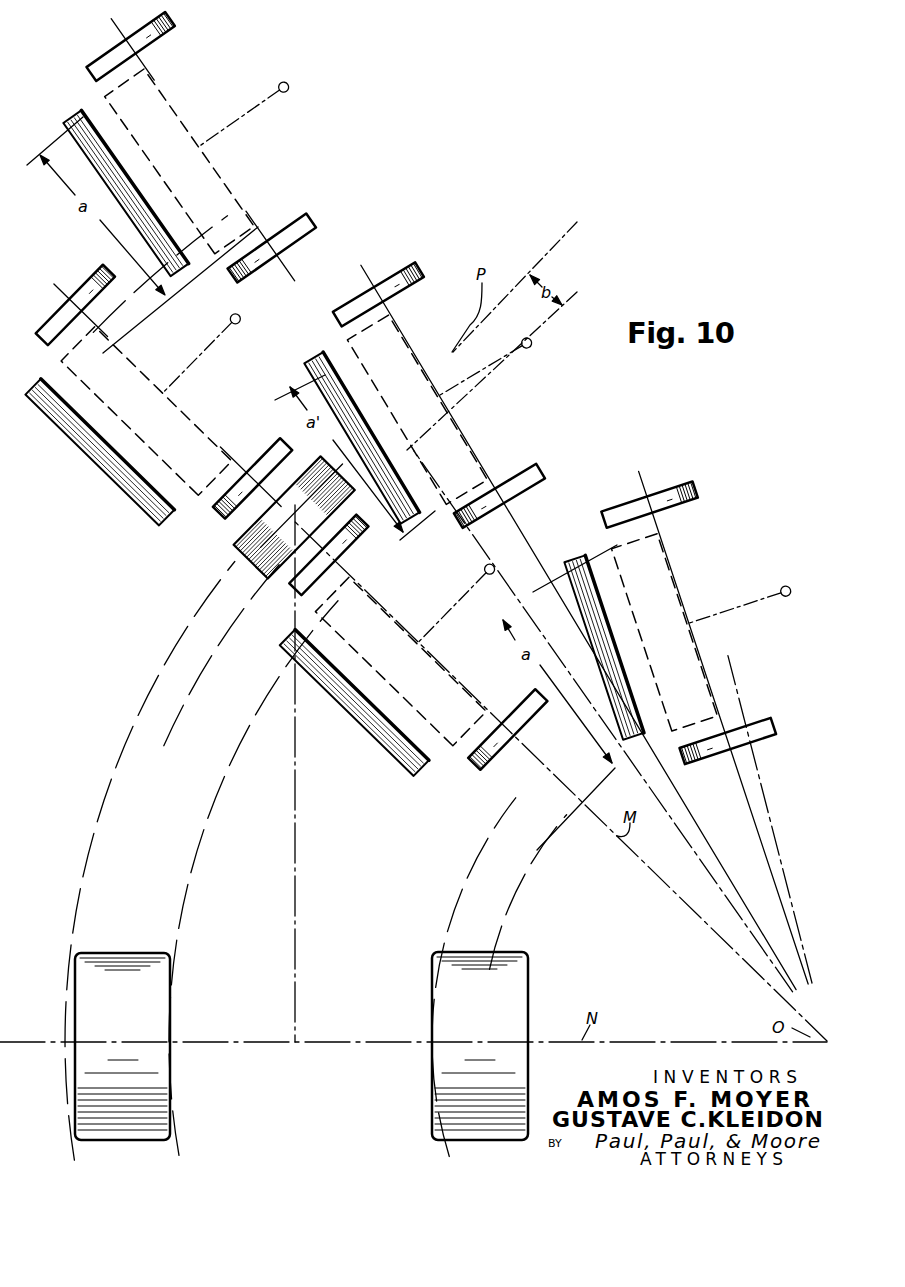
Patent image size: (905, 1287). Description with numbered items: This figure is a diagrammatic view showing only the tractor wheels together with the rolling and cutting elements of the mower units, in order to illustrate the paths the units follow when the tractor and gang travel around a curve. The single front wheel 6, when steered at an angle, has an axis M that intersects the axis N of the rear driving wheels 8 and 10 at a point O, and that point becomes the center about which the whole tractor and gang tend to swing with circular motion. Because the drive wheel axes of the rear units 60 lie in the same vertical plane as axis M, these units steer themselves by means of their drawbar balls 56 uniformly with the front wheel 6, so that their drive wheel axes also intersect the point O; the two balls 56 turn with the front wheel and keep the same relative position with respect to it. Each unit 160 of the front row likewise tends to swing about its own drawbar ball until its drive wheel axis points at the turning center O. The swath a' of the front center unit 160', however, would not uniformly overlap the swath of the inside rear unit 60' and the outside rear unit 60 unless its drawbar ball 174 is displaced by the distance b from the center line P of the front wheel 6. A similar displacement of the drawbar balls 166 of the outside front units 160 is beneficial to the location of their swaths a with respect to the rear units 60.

The front row mower unit 160 is at (462, 500).
The front center unit 160' is at (556, 641).
The drawbar ball 166 is at (283, 88).
The drawbar ball 174 is at (537, 340).
The drawbar ball 56 is at (238, 322).
The rear mower unit 60 is at (106, 320).
The inside rear unit 60' is at (354, 710).
The front wheel 6 is at (272, 572).
The rear driving wheel 8 is at (480, 970).
The rear driving wheel 10 is at (113, 972).